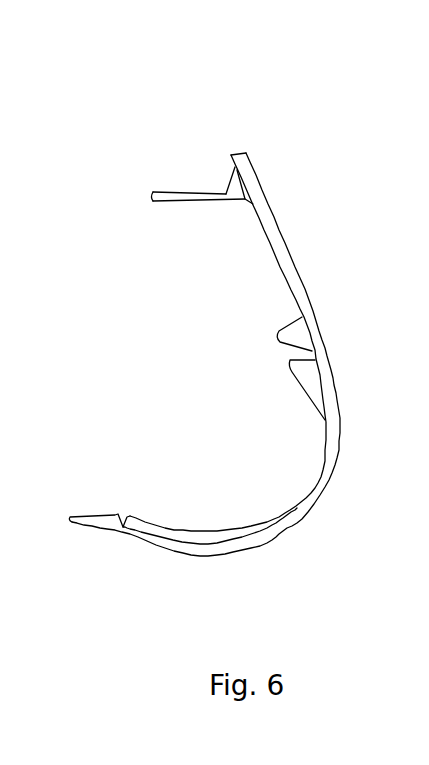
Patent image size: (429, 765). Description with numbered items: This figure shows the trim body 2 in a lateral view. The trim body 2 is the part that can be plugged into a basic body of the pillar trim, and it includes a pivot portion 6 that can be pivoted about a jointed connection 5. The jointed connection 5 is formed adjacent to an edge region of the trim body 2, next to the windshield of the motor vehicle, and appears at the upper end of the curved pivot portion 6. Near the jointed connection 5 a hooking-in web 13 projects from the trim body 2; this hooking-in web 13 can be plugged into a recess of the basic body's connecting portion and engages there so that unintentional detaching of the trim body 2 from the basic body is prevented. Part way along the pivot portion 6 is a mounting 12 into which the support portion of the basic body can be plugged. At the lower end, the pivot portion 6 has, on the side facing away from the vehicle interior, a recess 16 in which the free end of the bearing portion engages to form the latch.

The trim body 2 is at (241, 318).
The jointed connection 5 is at (253, 139).
The pivot portion 6 is at (303, 292).
The mounting 12 is at (282, 354).
The hooking-in web 13 is at (197, 199).
The recess 16 is at (134, 495).